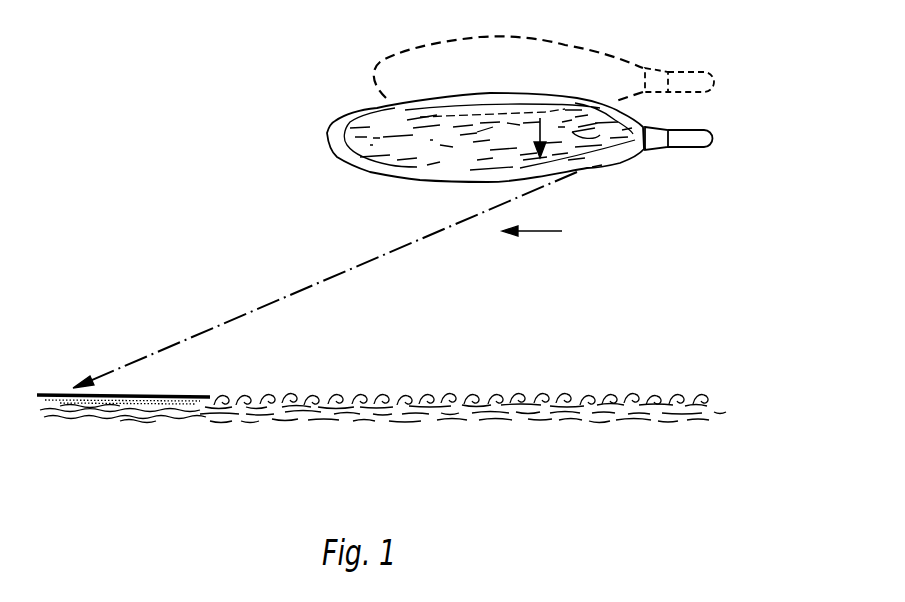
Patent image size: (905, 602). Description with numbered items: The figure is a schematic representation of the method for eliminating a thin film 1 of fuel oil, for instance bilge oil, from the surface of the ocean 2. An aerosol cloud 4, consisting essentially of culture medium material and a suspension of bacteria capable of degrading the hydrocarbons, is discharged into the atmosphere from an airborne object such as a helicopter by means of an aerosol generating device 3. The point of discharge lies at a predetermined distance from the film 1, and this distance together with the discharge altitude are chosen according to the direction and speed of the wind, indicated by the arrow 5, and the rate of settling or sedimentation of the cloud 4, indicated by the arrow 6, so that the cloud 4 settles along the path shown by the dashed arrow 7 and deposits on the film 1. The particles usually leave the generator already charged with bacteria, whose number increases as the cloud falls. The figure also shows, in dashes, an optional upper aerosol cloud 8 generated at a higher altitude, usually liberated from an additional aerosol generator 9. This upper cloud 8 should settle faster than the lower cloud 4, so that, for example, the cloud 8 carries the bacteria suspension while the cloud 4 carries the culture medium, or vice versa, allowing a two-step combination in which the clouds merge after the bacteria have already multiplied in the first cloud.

The thin film of fuel oil 1 is at (177, 395).
The surface of the ocean 2 is at (427, 407).
The aerosol generating device 3 is at (690, 148).
The aerosol cloud 4 is at (608, 142).
The arrow indicating wind direction and speed 5 is at (545, 233).
The arrow indicating rate of settling 6 is at (553, 132).
The dashed arrow indicating settling path 7 is at (244, 314).
The upper aerosol cloud 8 is at (585, 65).
The additional aerosol generator 9 is at (656, 70).